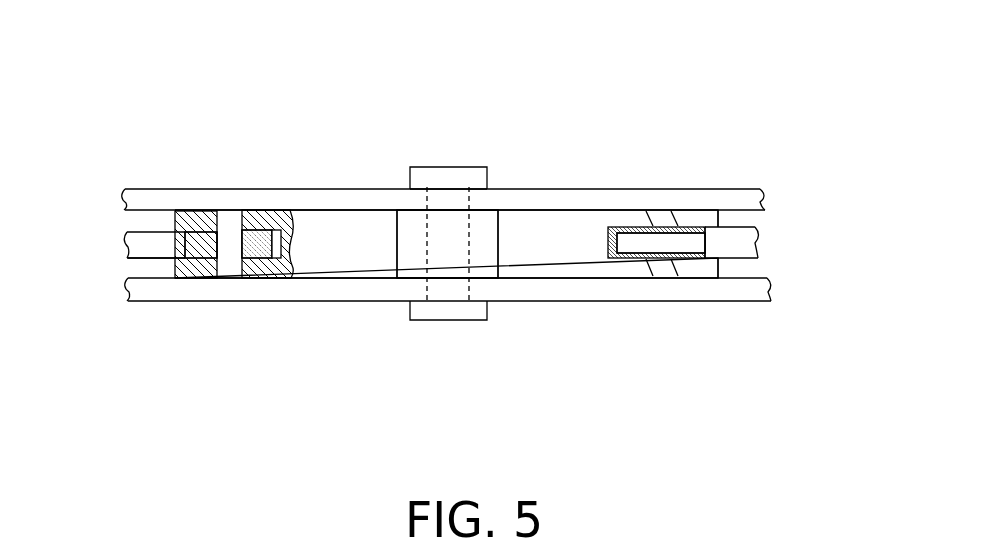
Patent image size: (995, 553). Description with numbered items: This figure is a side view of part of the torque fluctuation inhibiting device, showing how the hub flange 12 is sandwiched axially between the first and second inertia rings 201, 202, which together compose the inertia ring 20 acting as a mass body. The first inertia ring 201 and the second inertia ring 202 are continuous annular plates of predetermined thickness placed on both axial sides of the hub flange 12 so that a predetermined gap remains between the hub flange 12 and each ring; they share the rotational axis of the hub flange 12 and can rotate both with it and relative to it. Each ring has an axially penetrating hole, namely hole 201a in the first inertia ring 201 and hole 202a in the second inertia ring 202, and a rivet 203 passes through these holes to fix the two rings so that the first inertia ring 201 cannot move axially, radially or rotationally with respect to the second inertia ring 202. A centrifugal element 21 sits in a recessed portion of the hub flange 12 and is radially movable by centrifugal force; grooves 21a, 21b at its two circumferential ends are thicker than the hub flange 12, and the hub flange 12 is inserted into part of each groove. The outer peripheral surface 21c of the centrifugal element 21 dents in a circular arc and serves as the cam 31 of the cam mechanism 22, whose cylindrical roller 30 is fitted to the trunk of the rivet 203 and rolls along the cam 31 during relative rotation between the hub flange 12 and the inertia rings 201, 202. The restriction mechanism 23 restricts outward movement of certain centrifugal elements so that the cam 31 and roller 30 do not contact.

The hub flange 12 is at (133, 243).
The inertia ring 20 is at (475, 232).
The first inertia ring 201 is at (451, 351).
The hole 201a is at (428, 288).
The second inertia ring 202 is at (447, 125).
The hole 202a is at (463, 190).
The rivet 203 is at (473, 168).
The centrifugal element 21 is at (408, 226).
The groove 21a is at (616, 246).
The groove 21b is at (274, 262).
The outer peripheral surface 21c is at (672, 137).
The cam mechanism 22 is at (385, 228).
The restriction mechanism 23 is at (152, 265).
The roller 30 is at (485, 257).
The cam 31 is at (656, 151).